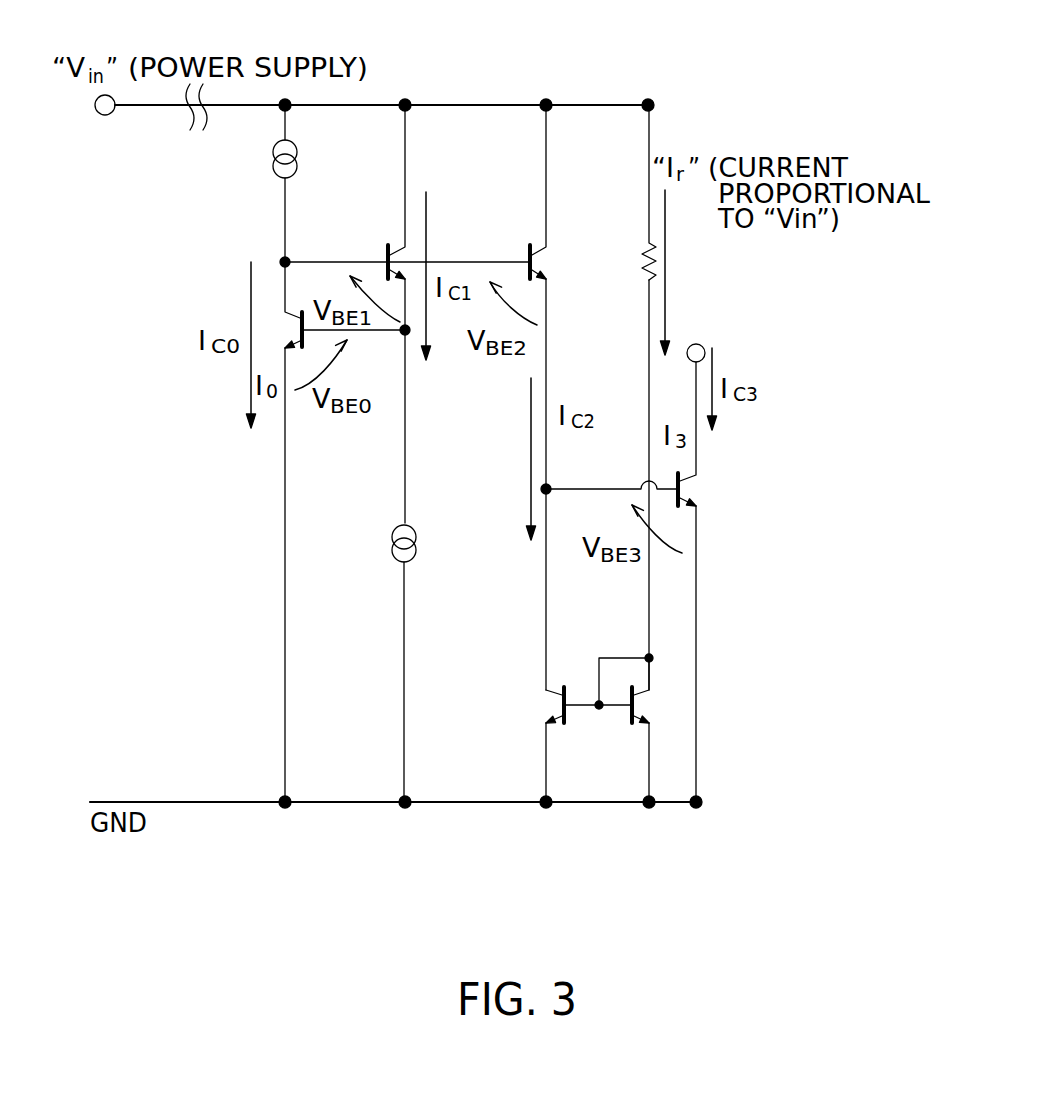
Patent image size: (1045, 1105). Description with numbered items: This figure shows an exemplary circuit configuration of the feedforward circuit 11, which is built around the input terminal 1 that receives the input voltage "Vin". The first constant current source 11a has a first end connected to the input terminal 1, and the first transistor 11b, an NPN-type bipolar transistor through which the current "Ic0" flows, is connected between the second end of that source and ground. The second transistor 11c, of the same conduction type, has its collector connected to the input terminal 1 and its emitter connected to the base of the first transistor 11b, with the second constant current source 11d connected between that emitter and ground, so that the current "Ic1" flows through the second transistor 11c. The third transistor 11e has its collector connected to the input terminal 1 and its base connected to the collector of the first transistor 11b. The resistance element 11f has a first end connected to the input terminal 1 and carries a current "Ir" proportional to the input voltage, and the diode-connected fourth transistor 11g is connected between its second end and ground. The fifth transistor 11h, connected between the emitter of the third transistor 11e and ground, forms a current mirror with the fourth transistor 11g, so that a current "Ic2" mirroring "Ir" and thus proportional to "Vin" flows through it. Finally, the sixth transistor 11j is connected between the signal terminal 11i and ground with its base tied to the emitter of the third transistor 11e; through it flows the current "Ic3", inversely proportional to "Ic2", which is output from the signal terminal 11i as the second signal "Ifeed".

The input terminal 1 is at (108, 116).
The feedforward circuit 11 is at (745, 670).
The first constant current source 11a is at (297, 160).
The first transistor 11b is at (297, 312).
The second transistor 11c is at (385, 248).
The second constant current source 11d is at (416, 540).
The third transistor 11e is at (540, 250).
The resistance element 11f is at (648, 250).
The fourth transistor 11g is at (640, 722).
The fifth transistor 11h is at (557, 690).
The signal terminal 11i is at (700, 340).
The sixth transistor 11j is at (683, 503).